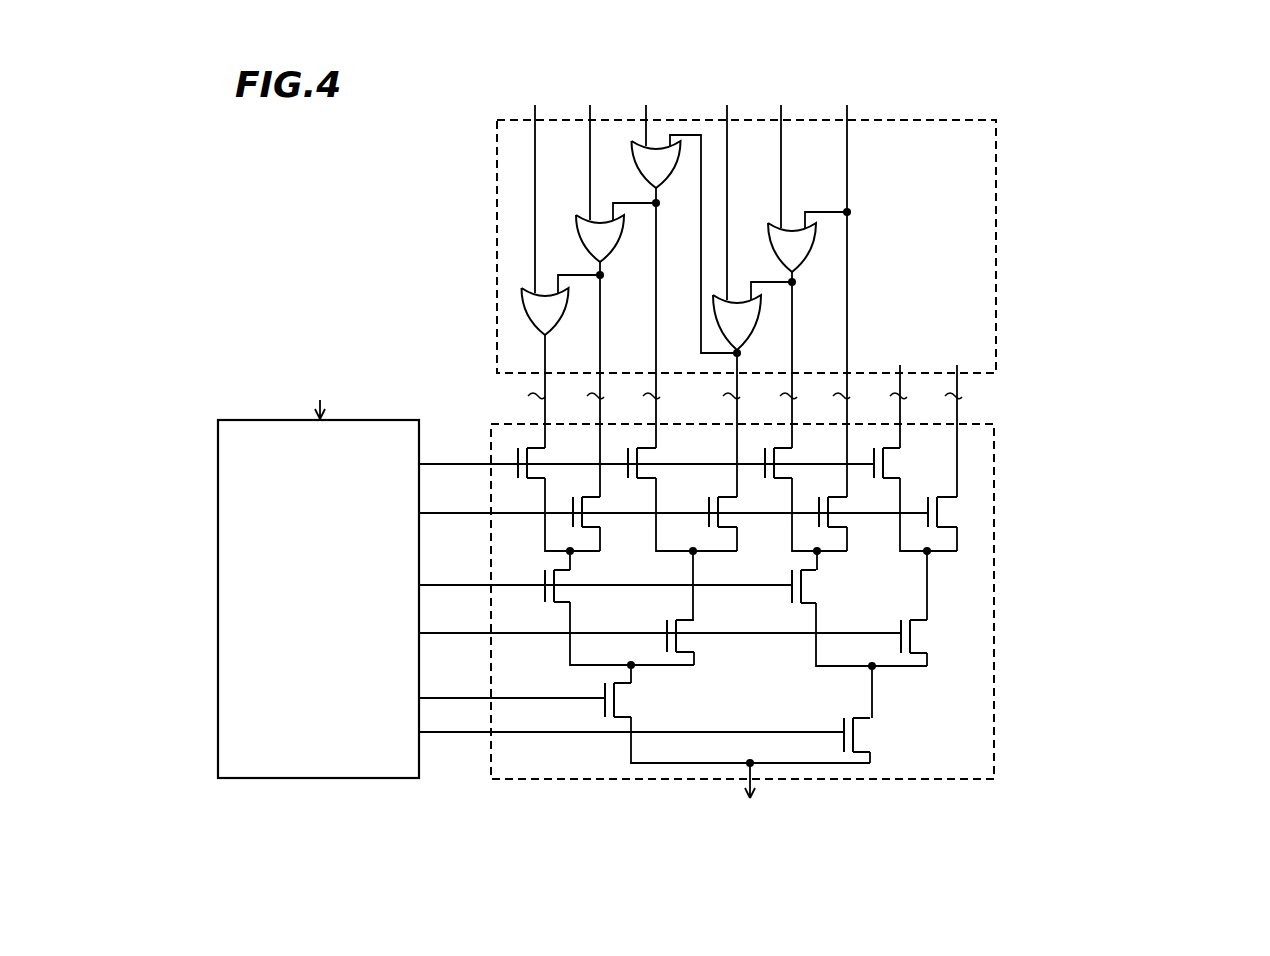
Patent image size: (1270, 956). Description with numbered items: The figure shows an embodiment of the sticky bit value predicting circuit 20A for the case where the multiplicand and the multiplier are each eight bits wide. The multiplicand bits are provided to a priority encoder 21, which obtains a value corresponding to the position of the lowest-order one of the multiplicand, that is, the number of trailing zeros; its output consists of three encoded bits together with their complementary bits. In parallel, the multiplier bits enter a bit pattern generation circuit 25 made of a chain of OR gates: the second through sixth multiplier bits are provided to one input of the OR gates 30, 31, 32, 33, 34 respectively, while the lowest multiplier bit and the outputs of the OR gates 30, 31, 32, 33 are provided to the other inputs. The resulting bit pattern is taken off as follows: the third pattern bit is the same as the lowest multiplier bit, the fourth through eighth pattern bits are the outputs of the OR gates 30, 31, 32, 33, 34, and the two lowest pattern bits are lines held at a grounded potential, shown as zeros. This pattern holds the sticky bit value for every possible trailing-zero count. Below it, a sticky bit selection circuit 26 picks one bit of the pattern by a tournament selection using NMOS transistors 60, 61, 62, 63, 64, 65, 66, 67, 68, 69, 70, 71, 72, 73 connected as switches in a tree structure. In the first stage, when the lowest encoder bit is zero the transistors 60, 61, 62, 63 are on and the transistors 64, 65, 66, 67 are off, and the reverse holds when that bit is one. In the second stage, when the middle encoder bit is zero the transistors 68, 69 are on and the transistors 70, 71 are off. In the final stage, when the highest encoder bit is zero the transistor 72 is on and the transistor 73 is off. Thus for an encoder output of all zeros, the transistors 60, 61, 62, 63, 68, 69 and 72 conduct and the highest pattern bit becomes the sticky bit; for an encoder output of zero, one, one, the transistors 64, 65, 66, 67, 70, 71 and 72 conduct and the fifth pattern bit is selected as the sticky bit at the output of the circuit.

The sticky bit value predicting circuit 20A is at (958, 76).
The priority encoder 21 is at (241, 780).
The bit pattern generation circuit 25 is at (996, 168).
The sticky bit selection circuit 26 is at (994, 465).
The OR gate 30 is at (770, 241).
The OR gate 31 is at (749, 319).
The OR gate 32 is at (636, 147).
The OR gate 33 is at (580, 232).
The OR gate 34 is at (566, 308).
The NMOS transistor 60 is at (535, 446).
The NMOS transistor 61 is at (648, 446).
The NMOS transistor 62 is at (782, 446).
The NMOS transistor 63 is at (890, 446).
The NMOS transistor 64 is at (590, 532).
The NMOS transistor 65 is at (727, 530).
The NMOS transistor 66 is at (838, 528).
The NMOS transistor 67 is at (953, 527).
The NMOS transistor 68 is at (563, 600).
The NMOS transistor 69 is at (837, 594).
The NMOS transistor 70 is at (683, 650).
The NMOS transistor 71 is at (920, 650).
The NMOS transistor 72 is at (624, 715).
The NMOS transistor 73 is at (863, 750).